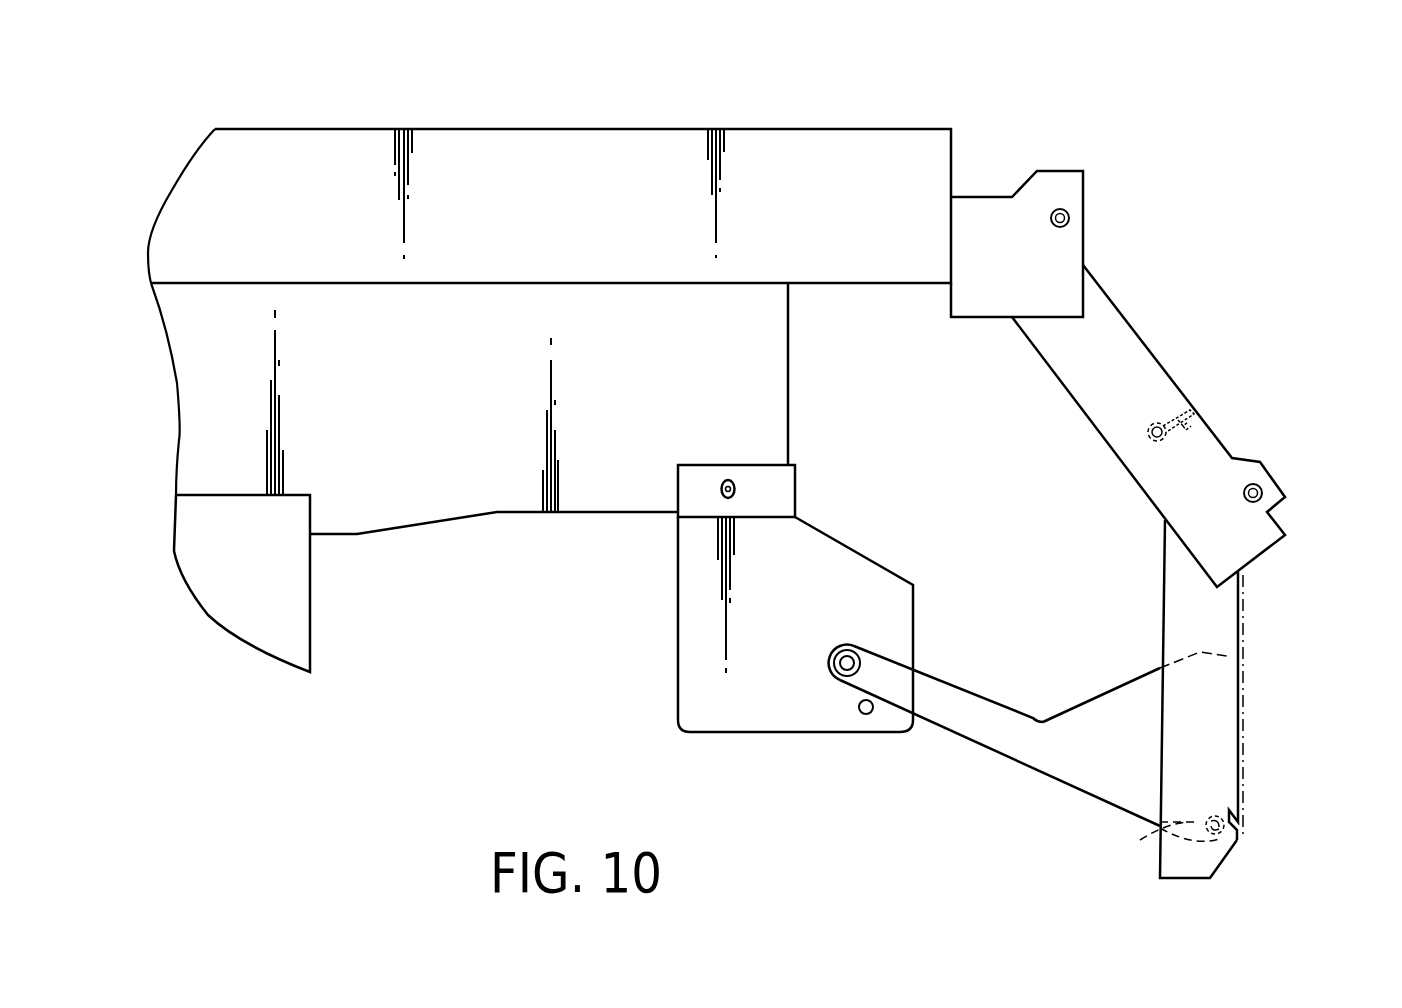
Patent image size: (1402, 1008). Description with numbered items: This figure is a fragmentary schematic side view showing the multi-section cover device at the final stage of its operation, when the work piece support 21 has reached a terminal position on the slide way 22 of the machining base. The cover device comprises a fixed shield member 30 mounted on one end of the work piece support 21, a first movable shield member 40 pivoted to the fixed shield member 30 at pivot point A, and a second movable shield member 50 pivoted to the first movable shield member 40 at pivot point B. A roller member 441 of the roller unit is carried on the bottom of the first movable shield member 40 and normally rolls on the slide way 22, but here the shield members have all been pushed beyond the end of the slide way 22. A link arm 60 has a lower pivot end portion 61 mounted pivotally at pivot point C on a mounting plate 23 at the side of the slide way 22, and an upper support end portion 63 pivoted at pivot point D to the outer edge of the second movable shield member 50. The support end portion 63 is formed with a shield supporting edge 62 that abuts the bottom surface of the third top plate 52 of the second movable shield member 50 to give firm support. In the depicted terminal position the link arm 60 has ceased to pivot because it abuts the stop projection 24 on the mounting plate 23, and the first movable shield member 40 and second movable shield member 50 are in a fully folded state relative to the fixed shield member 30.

The work piece support 21 is at (840, 153).
The slide way 22 is at (202, 461).
The mounting plate 23 is at (742, 700).
The stop projection 24 is at (863, 715).
The fixed shield member 30 is at (976, 185).
The first movable shield member 40 is at (1118, 288).
The roller member 441 is at (1150, 430).
The second movable shield member 50 is at (1258, 611).
The third top plate 52 is at (1240, 695).
The link arm 60 is at (1022, 782).
The lower pivot end portion 61 is at (888, 682).
The shield supporting edge 62 is at (1240, 752).
The upper support end portion 63 is at (1150, 832).
The pivot point A is at (1063, 209).
The pivot point B is at (1257, 488).
The pivot point C is at (838, 672).
The pivot point D is at (1240, 822).